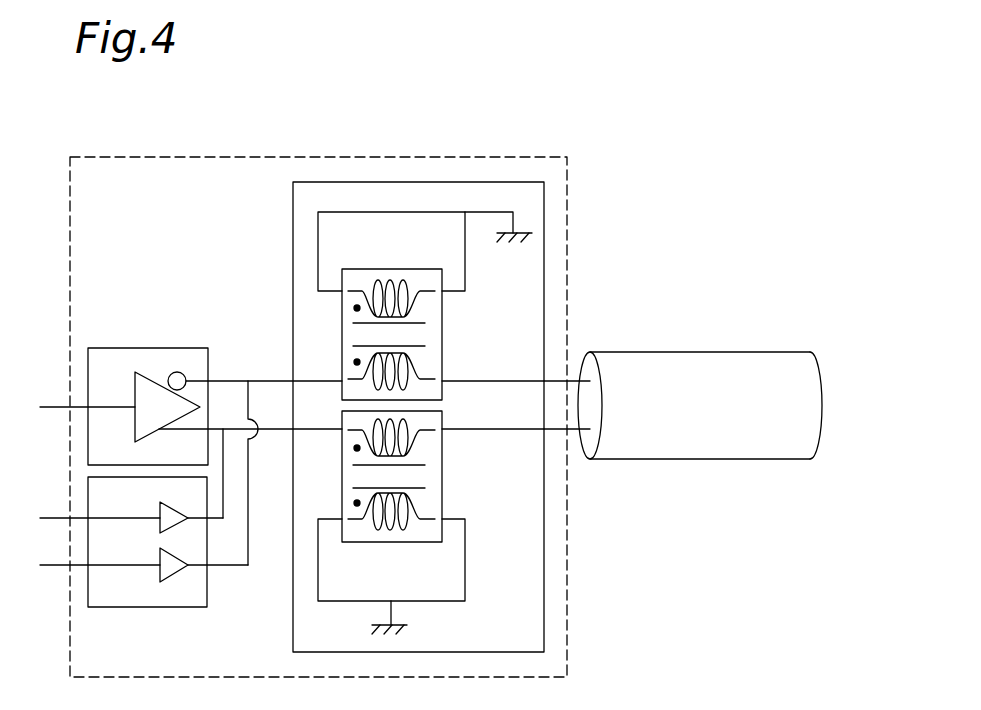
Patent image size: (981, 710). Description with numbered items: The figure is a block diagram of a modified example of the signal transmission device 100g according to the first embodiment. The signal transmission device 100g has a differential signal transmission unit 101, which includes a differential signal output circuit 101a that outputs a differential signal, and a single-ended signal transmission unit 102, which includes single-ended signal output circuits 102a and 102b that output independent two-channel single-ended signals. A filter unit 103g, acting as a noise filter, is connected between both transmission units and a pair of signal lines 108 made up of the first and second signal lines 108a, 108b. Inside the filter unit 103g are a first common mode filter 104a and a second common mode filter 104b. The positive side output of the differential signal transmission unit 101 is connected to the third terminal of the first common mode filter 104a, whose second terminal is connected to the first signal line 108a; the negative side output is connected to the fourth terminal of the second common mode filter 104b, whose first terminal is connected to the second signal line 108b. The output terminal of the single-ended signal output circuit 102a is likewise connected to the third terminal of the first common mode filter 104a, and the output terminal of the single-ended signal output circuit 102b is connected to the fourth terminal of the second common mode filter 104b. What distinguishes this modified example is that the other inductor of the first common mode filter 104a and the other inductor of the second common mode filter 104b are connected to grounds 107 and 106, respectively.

The signal transmission device 100g is at (505, 150).
The filter unit 103g is at (280, 265).
The differential signal transmission unit 101 is at (185, 345).
The differential signal output circuit 101a is at (158, 382).
The single-ended signal transmission unit 102 is at (222, 598).
The single-ended signal output circuit 102a is at (172, 505).
The single-ended signal output circuit 102b is at (175, 572).
The first common mode filter 104a is at (454, 474).
The second common mode filter 104b is at (454, 330).
The ground 106 is at (520, 237).
The ground 107 is at (405, 629).
The pair of signal lines 108 is at (760, 459).
The first signal line 108a is at (571, 429).
The second signal line 108b is at (571, 381).